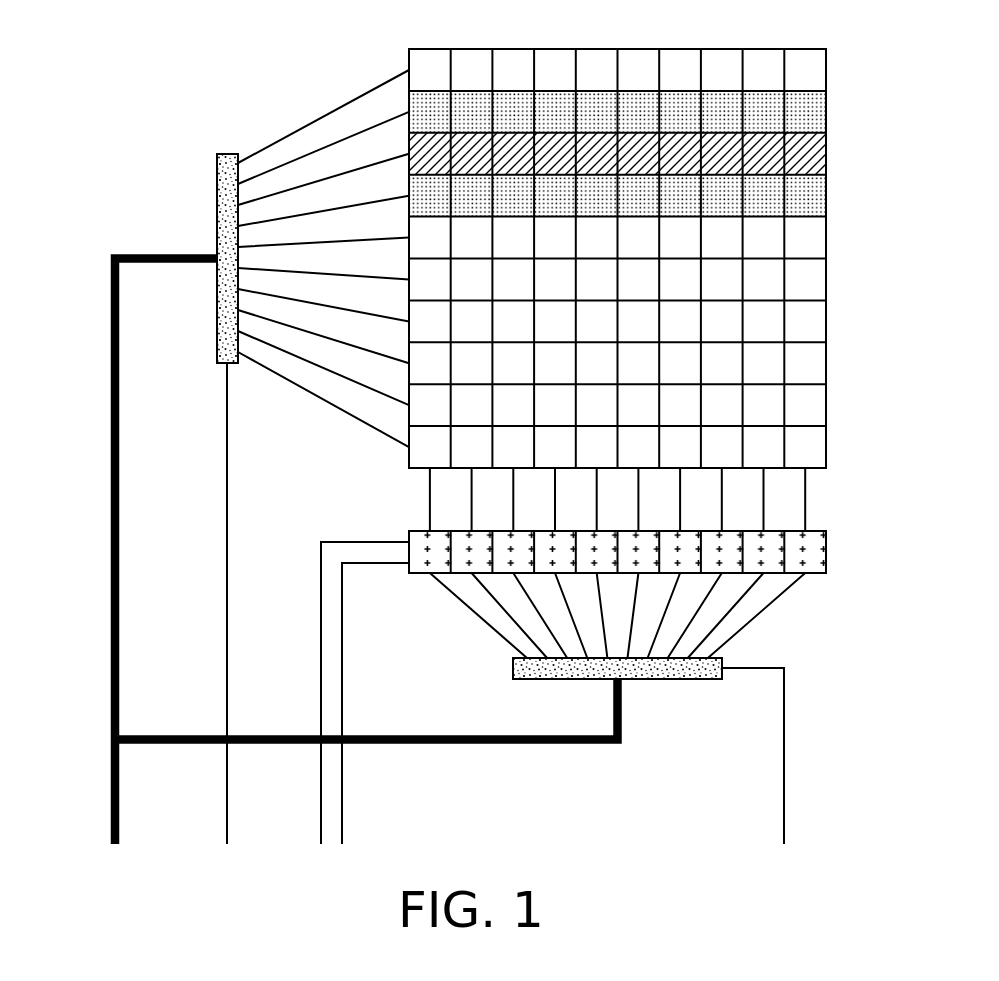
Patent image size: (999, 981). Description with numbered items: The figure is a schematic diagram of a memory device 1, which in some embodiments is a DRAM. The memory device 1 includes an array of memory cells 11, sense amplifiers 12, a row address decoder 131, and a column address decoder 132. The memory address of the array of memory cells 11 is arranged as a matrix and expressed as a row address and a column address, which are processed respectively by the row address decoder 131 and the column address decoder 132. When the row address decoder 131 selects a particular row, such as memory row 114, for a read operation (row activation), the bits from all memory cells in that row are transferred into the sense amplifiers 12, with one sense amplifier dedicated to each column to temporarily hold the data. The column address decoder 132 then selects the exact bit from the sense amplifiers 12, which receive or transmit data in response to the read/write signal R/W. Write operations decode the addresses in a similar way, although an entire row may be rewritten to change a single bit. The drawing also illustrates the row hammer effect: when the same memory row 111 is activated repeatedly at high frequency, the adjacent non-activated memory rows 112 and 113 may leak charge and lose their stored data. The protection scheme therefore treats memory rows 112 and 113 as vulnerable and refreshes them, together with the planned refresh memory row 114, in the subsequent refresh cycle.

The memory device 1 is at (70, 59).
The array of memory cells 11 is at (700, 245).
The memory row 111 is at (826, 154).
The adjacent memory row 112 is at (826, 112).
The adjacent memory row 113 is at (826, 196).
The memory row 114 is at (826, 446).
The sense amplifiers 12 is at (826, 552).
The row address decoder 131 is at (227, 154).
The column address decoder 132 is at (727, 660).